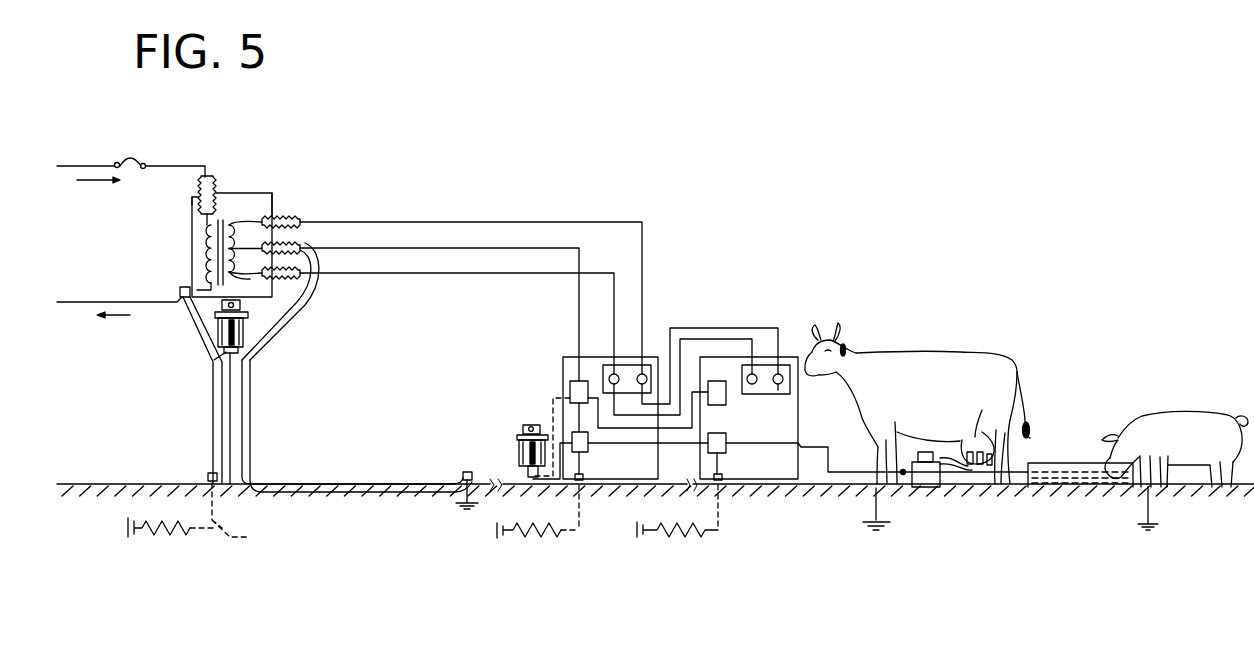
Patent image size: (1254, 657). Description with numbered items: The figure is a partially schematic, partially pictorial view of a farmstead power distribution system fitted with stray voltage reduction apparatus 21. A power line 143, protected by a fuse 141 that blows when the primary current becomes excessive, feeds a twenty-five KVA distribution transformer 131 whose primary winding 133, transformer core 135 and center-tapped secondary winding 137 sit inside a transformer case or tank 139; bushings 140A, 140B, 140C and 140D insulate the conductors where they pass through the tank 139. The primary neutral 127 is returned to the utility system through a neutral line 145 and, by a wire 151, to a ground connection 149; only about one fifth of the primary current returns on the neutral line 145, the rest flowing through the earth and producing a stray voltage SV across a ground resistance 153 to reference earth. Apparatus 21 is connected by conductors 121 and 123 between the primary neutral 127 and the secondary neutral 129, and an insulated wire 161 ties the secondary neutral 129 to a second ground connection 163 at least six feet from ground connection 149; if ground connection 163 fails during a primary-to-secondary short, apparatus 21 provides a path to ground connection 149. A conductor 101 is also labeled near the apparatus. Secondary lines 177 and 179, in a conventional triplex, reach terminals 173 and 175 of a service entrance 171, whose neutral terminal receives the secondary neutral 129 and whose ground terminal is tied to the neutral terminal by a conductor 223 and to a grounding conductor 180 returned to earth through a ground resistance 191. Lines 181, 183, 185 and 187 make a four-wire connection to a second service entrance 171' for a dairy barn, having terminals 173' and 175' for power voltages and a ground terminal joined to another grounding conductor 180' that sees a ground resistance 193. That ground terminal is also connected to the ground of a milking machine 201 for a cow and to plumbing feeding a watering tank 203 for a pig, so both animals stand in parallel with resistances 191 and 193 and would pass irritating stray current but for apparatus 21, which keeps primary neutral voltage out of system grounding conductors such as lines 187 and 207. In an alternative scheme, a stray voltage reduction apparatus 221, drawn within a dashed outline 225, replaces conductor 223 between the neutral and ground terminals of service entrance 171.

The power line 143 is at (82, 163).
The fuse 141 is at (128, 163).
The bushing 140D is at (215, 180).
The transformer case or tank 139 is at (193, 207).
The distribution transformer 131 is at (226, 200).
The primary winding 133 is at (197, 240).
The transformer core 135 is at (252, 220).
The secondary neutral 129 is at (311, 203).
The bushing 140A is at (302, 224).
The bushing 140B is at (302, 249).
The bushing 140C is at (303, 278).
The center-tapped secondary winding 137 is at (248, 280).
The neutral line 145 is at (91, 300).
The primary neutral 127 is at (183, 287).
The conductor 121 is at (272, 318).
The insulated wire 161 is at (252, 405).
The wire 151 is at (211, 393).
The conductor 123 is at (212, 360).
The ground wire 101 is at (231, 454).
The ground connection 149 is at (207, 477).
The stray voltage SV is at (265, 546).
The ground resistance 153 is at (170, 532).
The stray voltage reduction apparatus 21 is at (247, 330).
The secondary line 177 is at (484, 222).
The secondary line 179 is at (481, 276).
The service entrance 171 is at (579, 405).
The conductor 223 is at (570, 397).
The line 185 is at (606, 442).
The terminal 173 is at (677, 339).
The terminal 175 is at (707, 350).
The sensor housing 225 is at (553, 398).
The stray voltage reduction apparatus 221 is at (518, 447).
The second ground connection 163 is at (464, 470).
The grounding conductor 180 is at (618, 492).
The ground resistance 191 is at (530, 537).
The second service entrance 171' is at (774, 418).
The line 181 is at (723, 328).
The line 187 is at (670, 440).
The line 183 is at (742, 333).
The terminal 173' is at (816, 332).
The terminal 175' is at (767, 412).
The grounding conductor 180' is at (760, 503).
The ground resistance 193 is at (675, 537).
The line 207 is at (849, 484).
The milking machine 201 is at (932, 489).
The watering tank 203 is at (1031, 490).